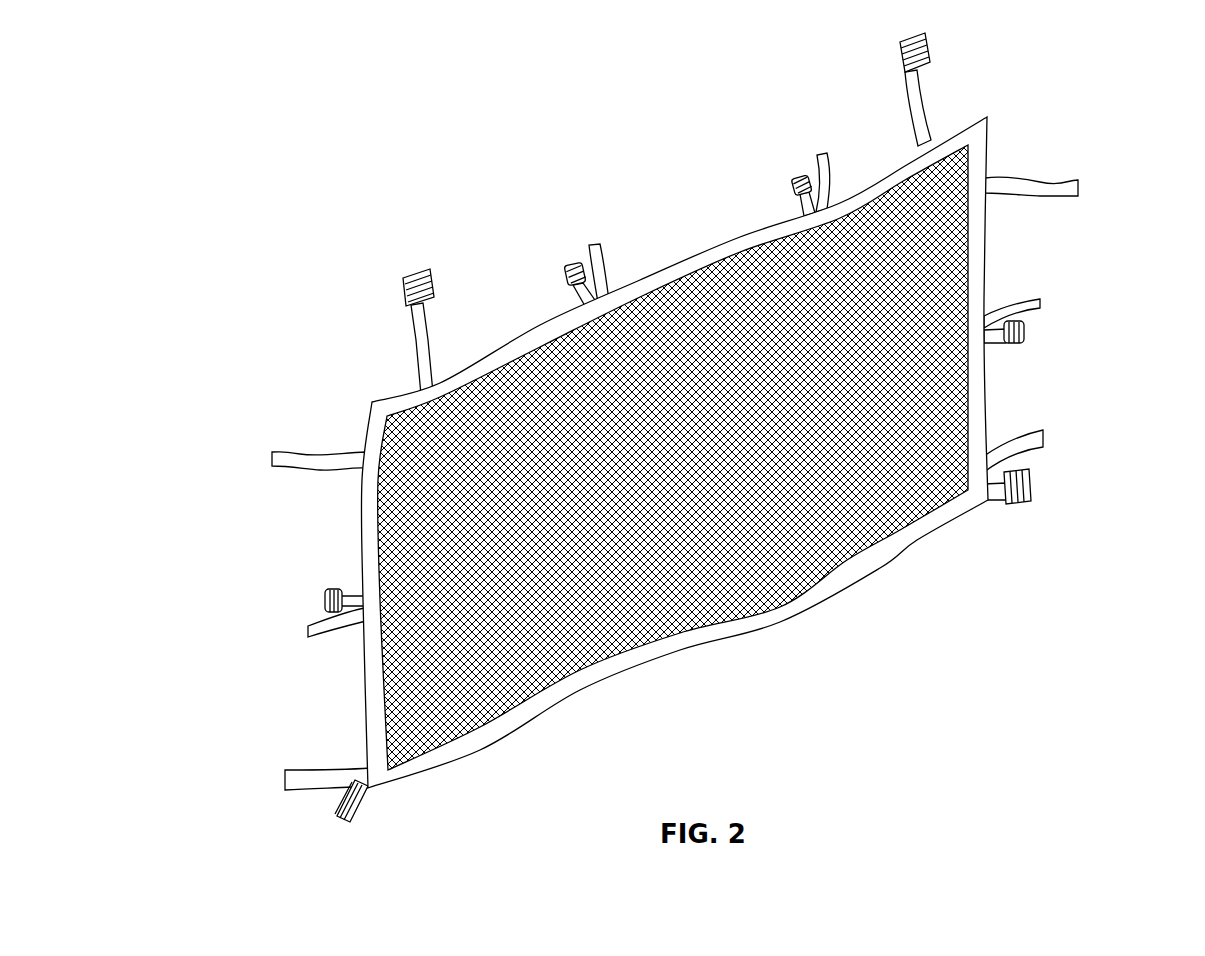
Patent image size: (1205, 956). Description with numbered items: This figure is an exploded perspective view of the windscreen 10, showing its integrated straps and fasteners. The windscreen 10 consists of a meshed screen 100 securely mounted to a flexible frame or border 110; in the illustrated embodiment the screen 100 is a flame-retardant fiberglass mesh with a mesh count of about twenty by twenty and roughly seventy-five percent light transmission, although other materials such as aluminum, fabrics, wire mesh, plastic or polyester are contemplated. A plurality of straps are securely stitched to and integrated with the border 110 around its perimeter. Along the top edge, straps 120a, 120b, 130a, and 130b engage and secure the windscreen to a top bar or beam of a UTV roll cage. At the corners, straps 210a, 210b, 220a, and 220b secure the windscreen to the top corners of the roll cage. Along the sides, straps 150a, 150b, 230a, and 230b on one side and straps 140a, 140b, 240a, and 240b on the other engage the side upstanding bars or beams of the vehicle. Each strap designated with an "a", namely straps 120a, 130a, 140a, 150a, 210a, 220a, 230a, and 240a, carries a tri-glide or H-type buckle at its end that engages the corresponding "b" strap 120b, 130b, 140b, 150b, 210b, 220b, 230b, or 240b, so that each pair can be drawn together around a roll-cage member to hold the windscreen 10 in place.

The windscreen 10 is at (352, 160).
The meshed screen 100 is at (848, 302).
The flexible frame or border 110 is at (683, 272).
The strap 120a is at (572, 268).
The strap 120b is at (593, 245).
The strap 130a is at (796, 181).
The strap 130b is at (821, 157).
The strap 140a is at (1024, 333).
The strap 140b is at (1032, 303).
The strap 150a is at (328, 597).
The strap 150b is at (308, 630).
The strap 210a is at (417, 322).
The strap 210b is at (300, 453).
The strap 220a is at (915, 108).
The strap 220b is at (1058, 185).
The strap 230a is at (340, 800).
The strap 230b is at (290, 780).
The strap 240a is at (1030, 490).
The strap 240b is at (1030, 440).